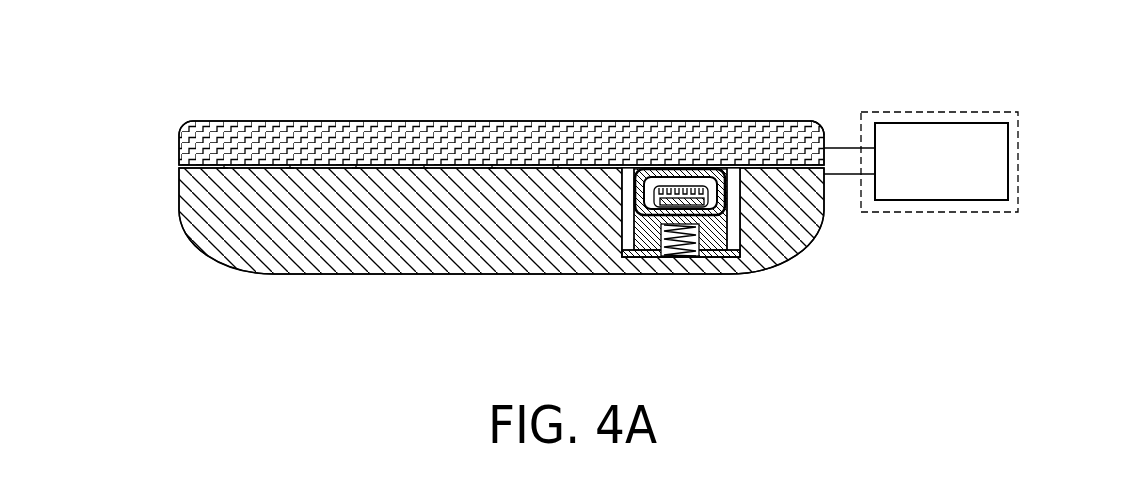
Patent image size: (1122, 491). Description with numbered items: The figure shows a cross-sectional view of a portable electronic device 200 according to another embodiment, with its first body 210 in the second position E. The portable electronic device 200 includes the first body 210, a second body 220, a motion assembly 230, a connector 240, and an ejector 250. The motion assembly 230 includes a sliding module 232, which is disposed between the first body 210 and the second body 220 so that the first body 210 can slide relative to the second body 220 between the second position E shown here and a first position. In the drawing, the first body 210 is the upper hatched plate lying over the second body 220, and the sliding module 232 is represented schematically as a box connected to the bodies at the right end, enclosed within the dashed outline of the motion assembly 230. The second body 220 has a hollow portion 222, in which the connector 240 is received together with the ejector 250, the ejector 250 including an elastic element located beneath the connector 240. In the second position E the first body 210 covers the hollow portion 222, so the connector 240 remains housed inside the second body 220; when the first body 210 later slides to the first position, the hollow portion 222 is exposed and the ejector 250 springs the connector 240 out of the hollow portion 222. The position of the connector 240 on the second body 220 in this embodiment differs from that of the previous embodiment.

The portable electronic device 200 is at (634, 189).
The first body 210 is at (431, 122).
The second body 220 is at (450, 255).
The hollow portion 222 is at (626, 206).
The motion assembly 230 is at (921, 159).
The sliding module 232 is at (935, 122).
The connector 240 is at (730, 193).
The ejector 250 is at (675, 258).
The second position E is at (816, 126).